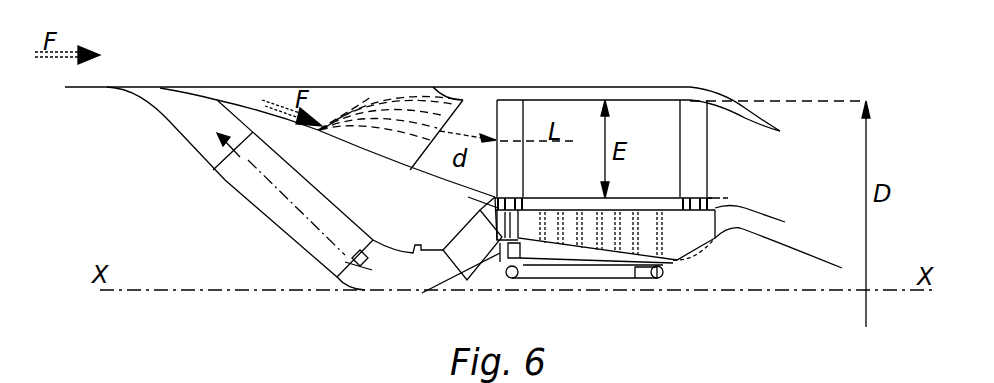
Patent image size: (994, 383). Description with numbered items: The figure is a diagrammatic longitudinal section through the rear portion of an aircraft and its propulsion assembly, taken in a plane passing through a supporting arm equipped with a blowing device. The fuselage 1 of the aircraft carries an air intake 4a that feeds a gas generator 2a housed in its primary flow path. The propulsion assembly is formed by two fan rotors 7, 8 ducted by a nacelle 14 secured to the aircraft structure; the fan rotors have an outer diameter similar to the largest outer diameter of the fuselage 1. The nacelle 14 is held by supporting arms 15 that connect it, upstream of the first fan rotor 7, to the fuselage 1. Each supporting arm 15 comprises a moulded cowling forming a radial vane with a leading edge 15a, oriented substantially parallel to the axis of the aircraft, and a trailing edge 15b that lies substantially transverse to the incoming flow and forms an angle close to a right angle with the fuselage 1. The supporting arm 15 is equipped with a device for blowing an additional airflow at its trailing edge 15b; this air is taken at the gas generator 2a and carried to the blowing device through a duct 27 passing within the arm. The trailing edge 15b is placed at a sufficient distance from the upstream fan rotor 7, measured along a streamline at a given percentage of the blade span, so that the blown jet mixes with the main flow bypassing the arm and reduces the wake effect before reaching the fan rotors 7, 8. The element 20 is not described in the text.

The fuselage 1 is at (250, 100).
The gas generator 2a is at (260, 188).
The air intake 4a is at (157, 103).
The fan rotor 7 is at (505, 127).
The fan rotor 8 is at (697, 143).
The nacelle 14 is at (613, 88).
The supporting arm 15 is at (340, 103).
The leading edge 15a is at (280, 86).
The trailing edge 15b is at (482, 108).
The engine 20 is at (745, 378).
The duct 27 is at (393, 107).